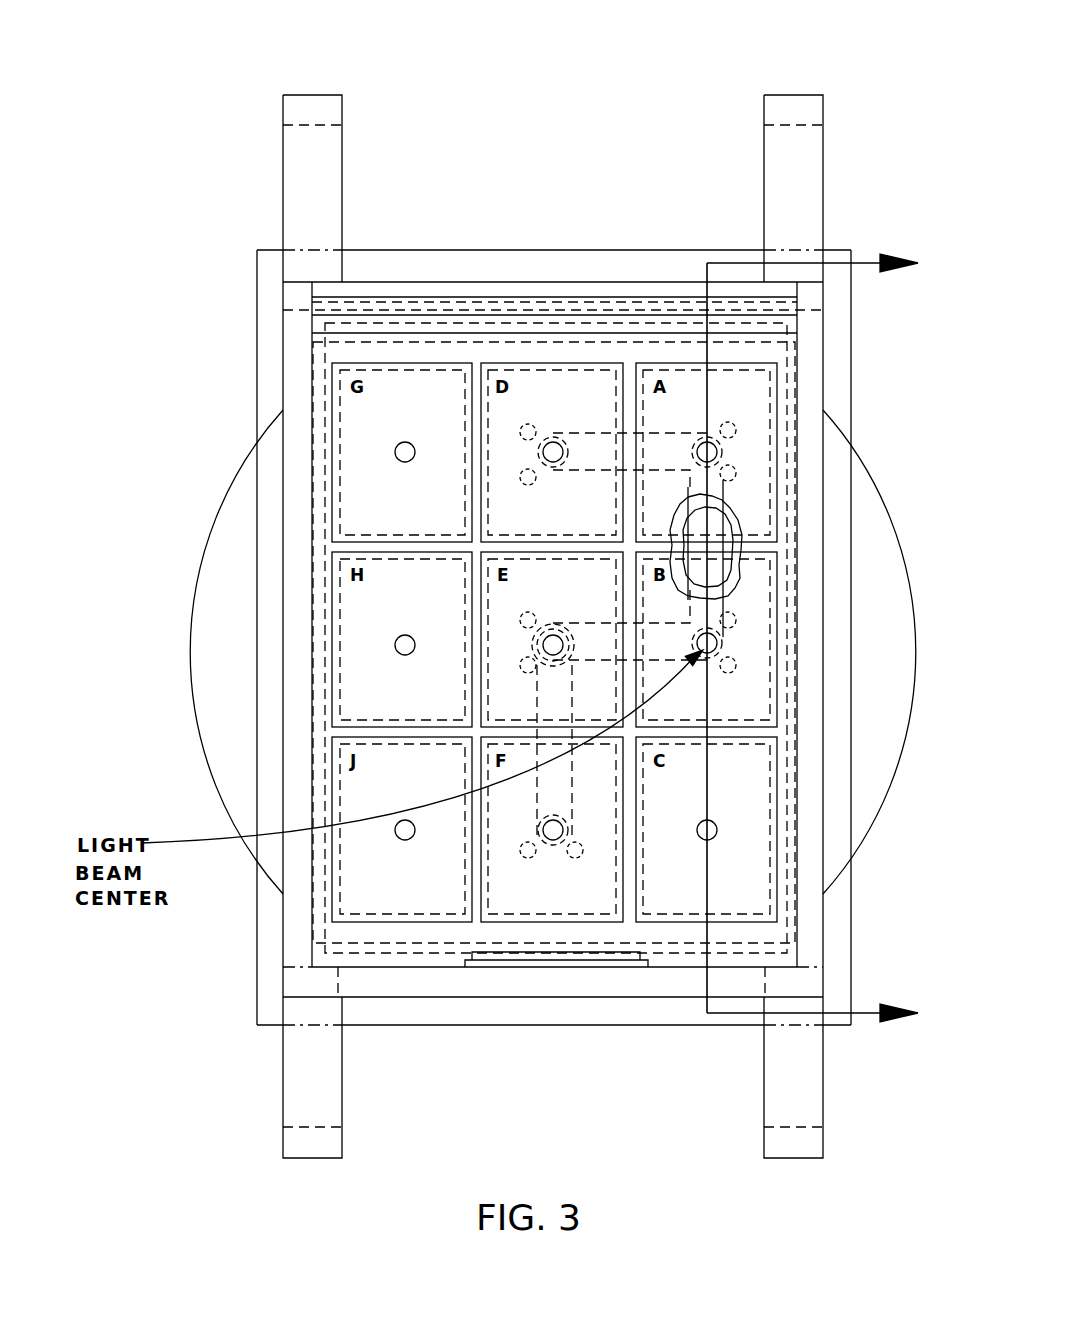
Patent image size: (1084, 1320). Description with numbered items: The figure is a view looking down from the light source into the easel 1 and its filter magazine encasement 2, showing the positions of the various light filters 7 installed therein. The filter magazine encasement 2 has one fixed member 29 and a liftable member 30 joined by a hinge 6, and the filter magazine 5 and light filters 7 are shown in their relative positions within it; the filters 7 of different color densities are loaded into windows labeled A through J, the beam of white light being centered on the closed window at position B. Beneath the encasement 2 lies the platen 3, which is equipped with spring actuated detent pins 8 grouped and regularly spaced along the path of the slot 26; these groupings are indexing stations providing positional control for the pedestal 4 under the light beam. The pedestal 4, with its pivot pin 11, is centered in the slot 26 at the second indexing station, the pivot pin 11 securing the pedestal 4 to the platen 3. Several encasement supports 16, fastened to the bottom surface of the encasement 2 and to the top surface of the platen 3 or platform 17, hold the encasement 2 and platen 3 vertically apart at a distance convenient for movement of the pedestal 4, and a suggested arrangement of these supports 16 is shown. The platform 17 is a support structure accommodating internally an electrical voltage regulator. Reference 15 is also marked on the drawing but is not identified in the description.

The easel 1 is at (242, 162).
The filter magazine encasement 2 is at (433, 997).
The platen 3 is at (730, 577).
The pedestal 4 is at (882, 480).
The filter magazine 5 is at (325, 450).
The hinge 6 is at (526, 297).
The light filters 7 is at (822, 640).
The spring actuated detent pins 8 is at (738, 470).
The pivot pin 11 is at (540, 632).
The turntable rim 15 is at (205, 652).
The encasement supports 16 is at (805, 95).
The platform 17 is at (613, 1027).
The slot 26 is at (565, 430).
The fixed member 29 is at (390, 282).
The liftable member 30 is at (447, 967).